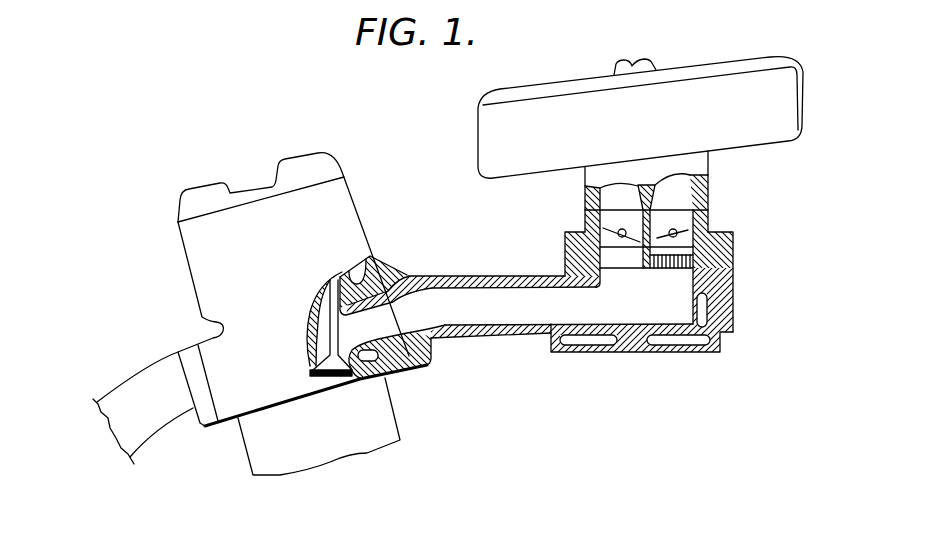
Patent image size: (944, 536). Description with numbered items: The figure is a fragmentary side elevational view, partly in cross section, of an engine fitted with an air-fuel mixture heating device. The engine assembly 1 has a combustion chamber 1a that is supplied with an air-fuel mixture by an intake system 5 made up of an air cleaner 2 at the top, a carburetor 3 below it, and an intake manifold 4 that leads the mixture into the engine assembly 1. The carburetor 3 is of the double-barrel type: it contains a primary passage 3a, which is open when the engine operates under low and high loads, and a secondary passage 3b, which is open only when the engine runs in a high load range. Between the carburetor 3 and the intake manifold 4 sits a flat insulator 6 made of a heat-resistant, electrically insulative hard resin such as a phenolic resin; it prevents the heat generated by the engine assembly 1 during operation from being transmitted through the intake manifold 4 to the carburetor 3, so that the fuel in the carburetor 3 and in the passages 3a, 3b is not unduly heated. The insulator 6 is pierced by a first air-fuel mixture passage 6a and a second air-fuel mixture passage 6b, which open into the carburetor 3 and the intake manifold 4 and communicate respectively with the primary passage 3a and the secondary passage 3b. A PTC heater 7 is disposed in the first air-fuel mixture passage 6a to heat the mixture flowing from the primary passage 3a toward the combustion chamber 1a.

The engine assembly 1 is at (257, 150).
The combustion chamber 1a is at (332, 382).
The air cleaner 2 is at (710, 67).
The carburetor 3 is at (712, 163).
The primary passage 3a is at (678, 198).
The secondary passage 3b is at (617, 202).
The intake manifold 4 is at (733, 296).
The intake system 5 is at (453, 173).
The flat insulator 6 is at (735, 252).
The first air-fuel mixture passage 6a is at (677, 273).
The second air-fuel mixture passage 6b is at (618, 258).
The PTC heater 7 is at (665, 267).